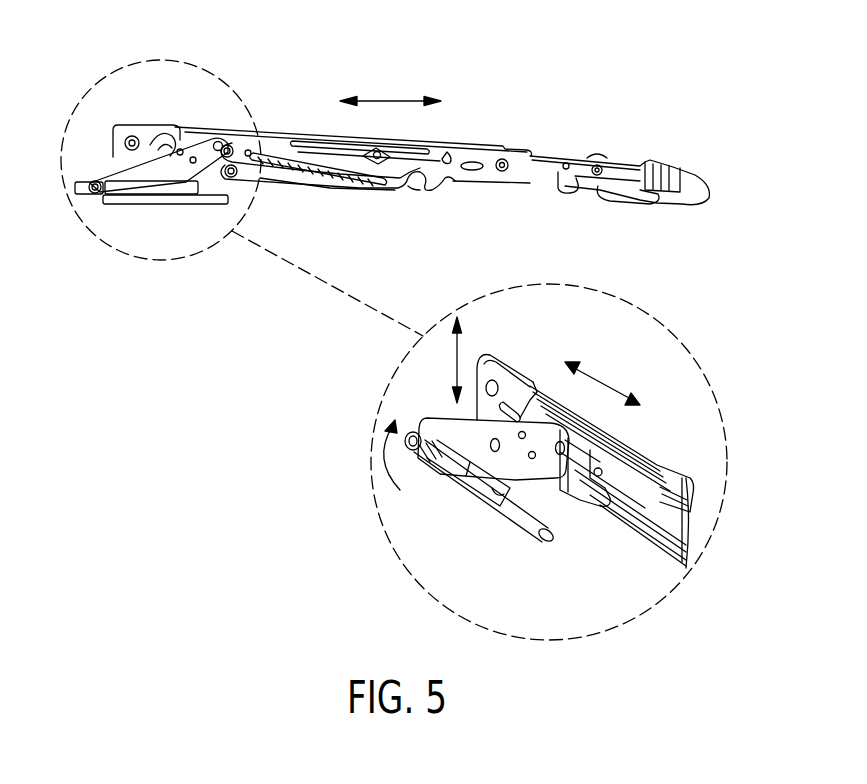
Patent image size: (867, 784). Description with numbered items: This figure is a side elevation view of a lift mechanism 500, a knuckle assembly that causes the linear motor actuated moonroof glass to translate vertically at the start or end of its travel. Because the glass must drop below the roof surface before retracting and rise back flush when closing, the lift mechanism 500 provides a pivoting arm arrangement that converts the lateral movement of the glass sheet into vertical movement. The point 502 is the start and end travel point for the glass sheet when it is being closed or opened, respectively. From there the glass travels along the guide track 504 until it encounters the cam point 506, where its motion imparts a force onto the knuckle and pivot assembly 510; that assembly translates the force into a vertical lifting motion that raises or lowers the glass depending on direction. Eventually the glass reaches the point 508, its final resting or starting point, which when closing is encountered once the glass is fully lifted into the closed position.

The lift mechanism 500 is at (598, 83).
The point 502 is at (425, 177).
The guide track 504 is at (286, 157).
The cam point 506 is at (238, 138).
The point 508 is at (168, 132).
The knuckle and pivot assembly 510 is at (108, 177).